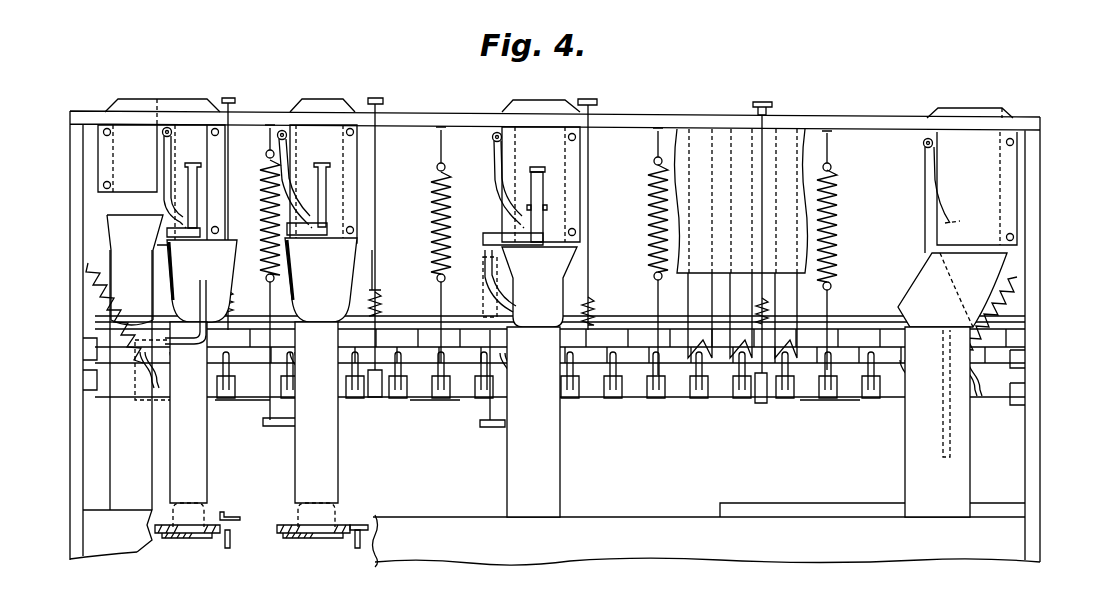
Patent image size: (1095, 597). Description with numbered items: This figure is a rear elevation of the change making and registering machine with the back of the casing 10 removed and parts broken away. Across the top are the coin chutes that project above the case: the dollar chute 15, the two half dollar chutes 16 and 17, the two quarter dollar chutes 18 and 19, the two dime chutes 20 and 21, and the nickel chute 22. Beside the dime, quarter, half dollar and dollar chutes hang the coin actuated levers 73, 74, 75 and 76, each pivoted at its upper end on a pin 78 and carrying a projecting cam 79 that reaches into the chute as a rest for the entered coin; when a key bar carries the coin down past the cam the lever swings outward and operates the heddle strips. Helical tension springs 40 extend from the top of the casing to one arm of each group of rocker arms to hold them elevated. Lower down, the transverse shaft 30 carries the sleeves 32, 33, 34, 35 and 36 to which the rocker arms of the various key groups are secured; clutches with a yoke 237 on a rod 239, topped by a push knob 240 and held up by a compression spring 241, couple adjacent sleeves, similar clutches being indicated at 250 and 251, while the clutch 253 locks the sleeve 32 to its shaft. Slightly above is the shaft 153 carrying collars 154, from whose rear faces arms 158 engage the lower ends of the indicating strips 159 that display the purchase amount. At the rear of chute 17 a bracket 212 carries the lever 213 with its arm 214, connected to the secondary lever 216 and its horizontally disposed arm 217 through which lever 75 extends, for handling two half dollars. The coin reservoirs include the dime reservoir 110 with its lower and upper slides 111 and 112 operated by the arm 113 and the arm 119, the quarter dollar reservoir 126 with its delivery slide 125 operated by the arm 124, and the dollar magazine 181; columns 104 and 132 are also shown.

The casing 10 is at (1040, 183).
The dollar chute 15 is at (954, 115).
The half dollar chute 16 is at (540, 100).
The half dollar chute 17 is at (540, 149).
The quarter dollar chute 18 is at (318, 106).
The quarter dollar chute 19 is at (312, 157).
The dime chute 20 is at (190, 108).
The dime chute 21 is at (190, 183).
The nickel chute 22 is at (122, 108).
The shaft 30 is at (95, 382).
The sleeve 32 is at (822, 395).
The sleeve 33 is at (590, 392).
The sleeve 34 is at (425, 392).
The sleeve 35 is at (243, 387).
The sleeve 36 is at (155, 393).
The helical tension spring 40 is at (262, 190).
The coin actuated lever 73 is at (170, 200).
The coin actuated lever 74 is at (280, 148).
The coin actuated lever 75 is at (495, 165).
The coin actuated lever 76 is at (926, 195).
The pin 78 is at (162, 133).
The cam 79 is at (170, 218).
The column 104 is at (118, 452).
The dime reservoir 110 is at (192, 468).
The lower slide 111 is at (238, 533).
The upper slide 112 is at (220, 518).
The arm 113 is at (227, 547).
The rearwardly extending arm 119 is at (240, 517).
The rearwardly extending arm 124 is at (353, 543).
The delivery slide 125 is at (353, 515).
The quarter dollar reservoir 126 is at (325, 478).
The tube 132 is at (540, 482).
The shaft 153 is at (1000, 363).
The collar 154 is at (627, 353).
The arm 158 is at (698, 390).
The indicating strip 159 is at (738, 293).
The dollar magazine 181 is at (920, 477).
The bracket 212 is at (548, 207).
The lever 213 is at (540, 192).
The arm 214 is at (548, 169).
The secondary lever 216 is at (490, 412).
The horizontally disposed arm 217 is at (492, 427).
The yoke 237 is at (373, 395).
The rod 239 is at (378, 272).
The push knob 240 is at (378, 100).
The compression spring 241 is at (382, 302).
The clutch 250 is at (600, 103).
The clutch 251 is at (229, 100).
The clutch 253 is at (760, 395).